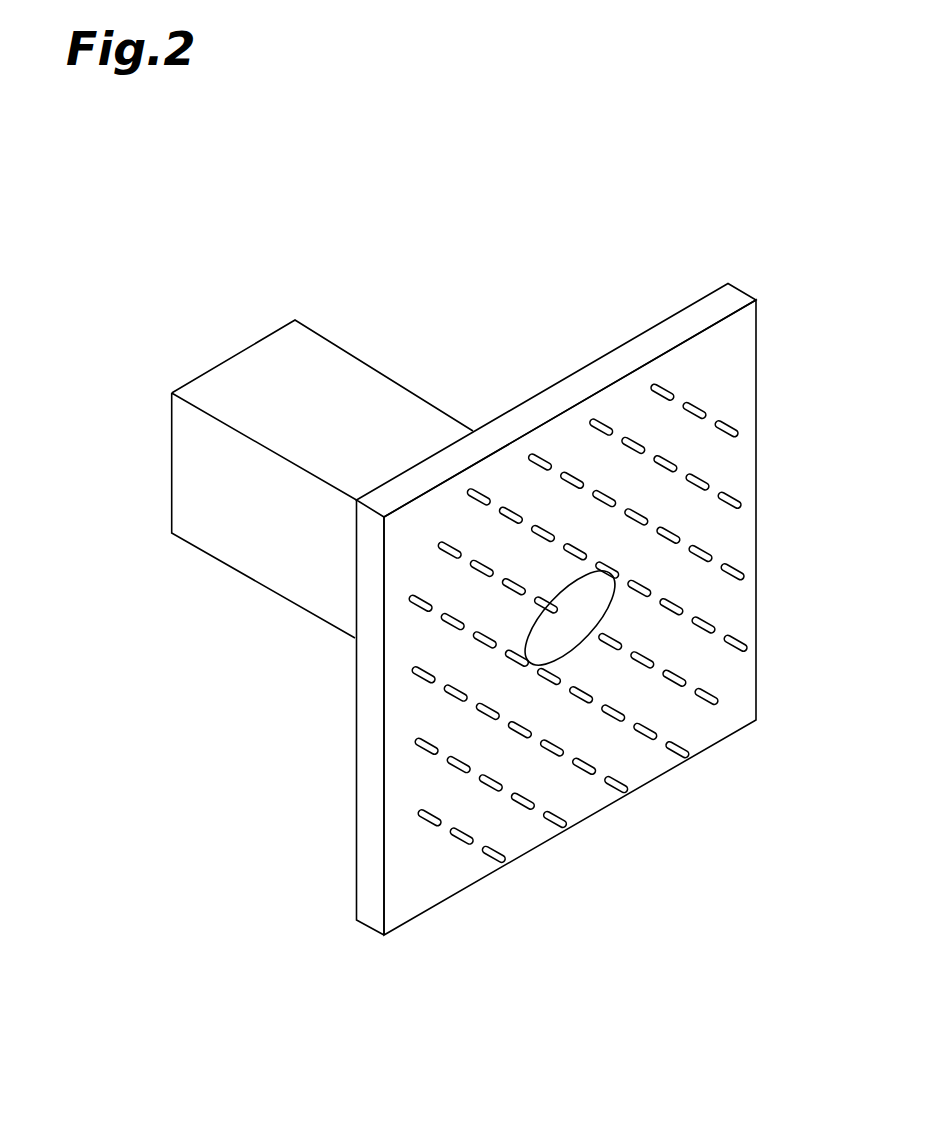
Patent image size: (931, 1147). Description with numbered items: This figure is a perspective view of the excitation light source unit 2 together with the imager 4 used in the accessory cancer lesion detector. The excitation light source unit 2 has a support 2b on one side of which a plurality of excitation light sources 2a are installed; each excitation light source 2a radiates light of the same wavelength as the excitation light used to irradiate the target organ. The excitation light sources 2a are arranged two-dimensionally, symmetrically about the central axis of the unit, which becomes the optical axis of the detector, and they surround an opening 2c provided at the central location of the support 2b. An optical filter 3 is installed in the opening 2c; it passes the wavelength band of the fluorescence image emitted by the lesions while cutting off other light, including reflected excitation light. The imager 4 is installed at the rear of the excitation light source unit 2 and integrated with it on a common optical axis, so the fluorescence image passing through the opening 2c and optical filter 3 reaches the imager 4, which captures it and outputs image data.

The excitation light source unit 2 is at (586, 573).
The excitation light sources 2a is at (732, 426).
The support 2b is at (735, 298).
The opening 2c is at (612, 612).
The optical filter 3 is at (662, 669).
The imager 4 is at (245, 578).